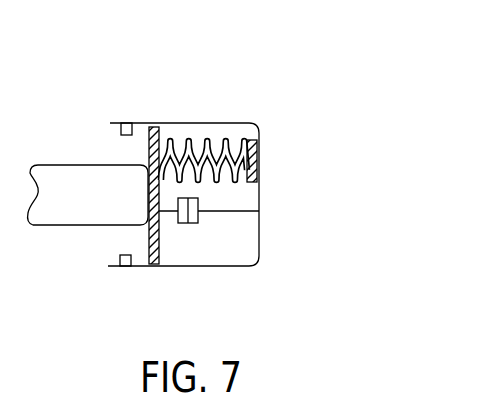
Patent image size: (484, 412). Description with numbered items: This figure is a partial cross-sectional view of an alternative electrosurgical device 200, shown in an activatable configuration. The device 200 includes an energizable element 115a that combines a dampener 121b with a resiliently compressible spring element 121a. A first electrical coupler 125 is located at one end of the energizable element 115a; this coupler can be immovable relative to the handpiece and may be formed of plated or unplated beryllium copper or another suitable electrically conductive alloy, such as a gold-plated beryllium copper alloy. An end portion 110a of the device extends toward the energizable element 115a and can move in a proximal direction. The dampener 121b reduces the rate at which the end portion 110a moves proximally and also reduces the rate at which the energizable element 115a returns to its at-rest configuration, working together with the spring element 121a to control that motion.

The connector assembly 200 is at (222, 91).
The end portion 110a is at (92, 218).
The energizable element 115a is at (212, 267).
The resiliently compressible spring element 121a is at (216, 141).
The dampener 121b is at (235, 211).
The first electrical coupler 125 is at (250, 165).